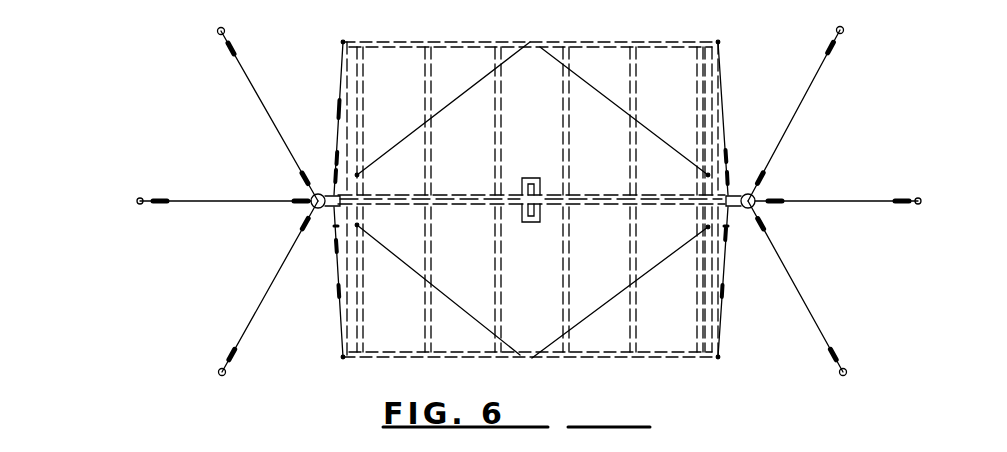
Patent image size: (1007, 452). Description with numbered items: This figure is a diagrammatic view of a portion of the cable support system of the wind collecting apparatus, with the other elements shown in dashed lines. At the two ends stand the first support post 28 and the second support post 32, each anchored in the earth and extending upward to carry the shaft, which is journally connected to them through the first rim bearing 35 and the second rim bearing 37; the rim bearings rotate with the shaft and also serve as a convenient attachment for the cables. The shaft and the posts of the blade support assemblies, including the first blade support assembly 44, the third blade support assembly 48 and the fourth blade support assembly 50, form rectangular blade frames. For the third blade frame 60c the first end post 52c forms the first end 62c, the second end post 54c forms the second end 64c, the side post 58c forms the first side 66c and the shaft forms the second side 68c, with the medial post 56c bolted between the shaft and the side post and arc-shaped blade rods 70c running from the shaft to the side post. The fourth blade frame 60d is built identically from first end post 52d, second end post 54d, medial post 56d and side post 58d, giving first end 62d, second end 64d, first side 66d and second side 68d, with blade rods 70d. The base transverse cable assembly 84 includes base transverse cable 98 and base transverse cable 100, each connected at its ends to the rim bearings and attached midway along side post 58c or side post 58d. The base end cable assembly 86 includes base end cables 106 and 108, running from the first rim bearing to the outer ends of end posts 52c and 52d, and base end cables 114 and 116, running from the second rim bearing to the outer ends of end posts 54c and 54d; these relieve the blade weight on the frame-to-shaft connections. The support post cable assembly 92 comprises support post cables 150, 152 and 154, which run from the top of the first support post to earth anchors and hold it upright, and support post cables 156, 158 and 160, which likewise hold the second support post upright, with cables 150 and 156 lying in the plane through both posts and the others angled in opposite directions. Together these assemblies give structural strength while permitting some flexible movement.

The first support post 28 is at (310, 205).
The second support post 32 is at (756, 197).
The first rim bearing 35 is at (333, 238).
The second rim bearing 37 is at (722, 228).
The first blade support assembly 44 is at (447, 206).
The third blade support assembly 48 is at (553, 37).
The fourth blade support assembly 50 is at (685, 358).
The first end post 52c is at (345, 97).
The first end post 52d is at (345, 302).
The second end post 54c is at (716, 80).
The second end post 54d is at (720, 300).
The medial post 56c is at (515, 106).
The medial post 56d is at (525, 360).
The side post 58c is at (400, 40).
The side post 58d is at (420, 362).
The third blade frame 60c is at (584, 38).
The fourth blade frame 60d is at (598, 362).
The first end 62c is at (350, 115).
The first end 62d is at (350, 283).
The second end 64c is at (716, 100).
The second end 64d is at (714, 258).
The first side 66c is at (605, 38).
The first side 66d is at (620, 362).
The second side 68c is at (600, 204).
The second side 68d is at (470, 193).
The blade rods 70c is at (632, 158).
The blade rods 70d is at (427, 318).
The base transverse cable assembly 84 is at (606, 292).
The base end cable assembly 86 is at (727, 136).
The support post cable assembly 92 is at (210, 196).
The base transverse cable 98 is at (402, 122).
The base transverse cable 100 is at (449, 297).
The base end cable 106 is at (338, 136).
The base end cable 108 is at (338, 262).
The base end cable 114 is at (724, 126).
The base end cable 116 is at (726, 275).
The support post cable 150 is at (188, 198).
The support post cable 152 is at (244, 72).
The support post cable 154 is at (258, 309).
The support post cable 156 is at (845, 200).
The support post cable 158 is at (815, 72).
The support post cable 160 is at (810, 314).